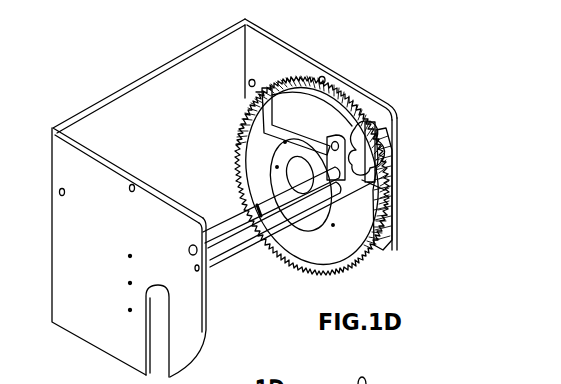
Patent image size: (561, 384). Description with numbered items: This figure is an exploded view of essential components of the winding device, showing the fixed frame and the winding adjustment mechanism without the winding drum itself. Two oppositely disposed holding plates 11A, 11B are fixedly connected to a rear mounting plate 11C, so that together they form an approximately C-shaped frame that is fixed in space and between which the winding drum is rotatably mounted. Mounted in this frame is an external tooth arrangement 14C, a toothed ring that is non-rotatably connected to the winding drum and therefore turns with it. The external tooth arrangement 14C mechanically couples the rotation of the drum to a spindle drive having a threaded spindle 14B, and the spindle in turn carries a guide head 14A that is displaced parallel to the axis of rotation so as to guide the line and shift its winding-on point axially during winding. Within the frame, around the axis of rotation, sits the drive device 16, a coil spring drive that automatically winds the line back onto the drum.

The holding plate 11A is at (280, 63).
The holding plate 11B is at (90, 286).
The rear mounting plate 11C is at (157, 134).
The guide head 14A is at (357, 182).
The threaded spindle 14B is at (248, 237).
The external tooth arrangement 14C is at (379, 256).
The drive device 16 is at (250, 150).